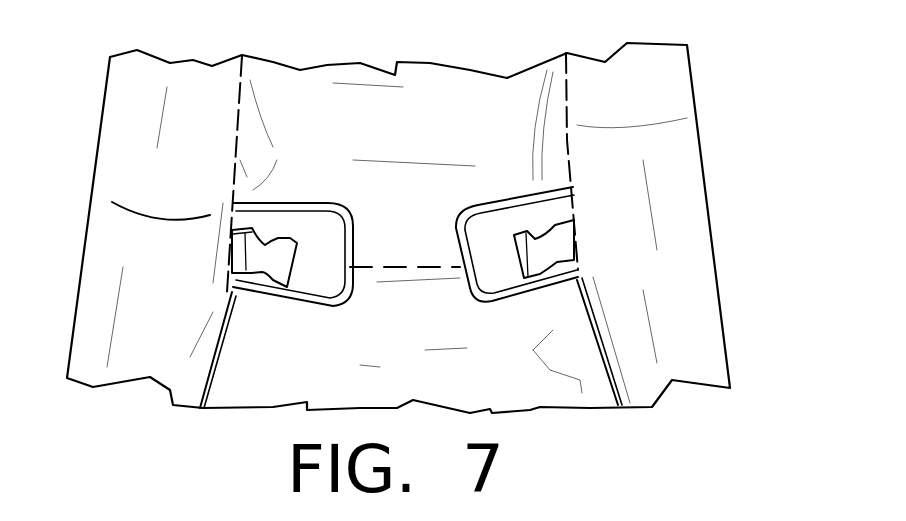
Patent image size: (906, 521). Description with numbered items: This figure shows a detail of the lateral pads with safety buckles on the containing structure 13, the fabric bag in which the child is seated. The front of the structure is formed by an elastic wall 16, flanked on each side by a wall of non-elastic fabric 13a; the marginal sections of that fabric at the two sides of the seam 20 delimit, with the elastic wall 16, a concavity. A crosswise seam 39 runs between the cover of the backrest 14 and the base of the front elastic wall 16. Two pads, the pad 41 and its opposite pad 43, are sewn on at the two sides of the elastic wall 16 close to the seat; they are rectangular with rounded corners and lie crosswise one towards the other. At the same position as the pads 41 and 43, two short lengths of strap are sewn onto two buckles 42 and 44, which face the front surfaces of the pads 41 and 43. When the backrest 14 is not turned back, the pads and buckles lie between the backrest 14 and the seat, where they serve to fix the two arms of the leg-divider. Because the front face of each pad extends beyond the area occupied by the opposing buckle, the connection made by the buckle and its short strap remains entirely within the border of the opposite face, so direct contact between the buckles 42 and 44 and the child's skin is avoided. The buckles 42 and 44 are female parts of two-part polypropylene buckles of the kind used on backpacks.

The containing structure 13 is at (718, 166).
The wall of non-elastic fabric 13a is at (155, 178).
The backrest 14 is at (477, 330).
The elastic wall 16 is at (395, 128).
The seam 20 is at (237, 112).
The crosswise seam 39 is at (412, 262).
The pad 41 is at (487, 218).
The buckle 42 is at (540, 252).
The pad 43 is at (315, 230).
The buckle 44 is at (273, 262).